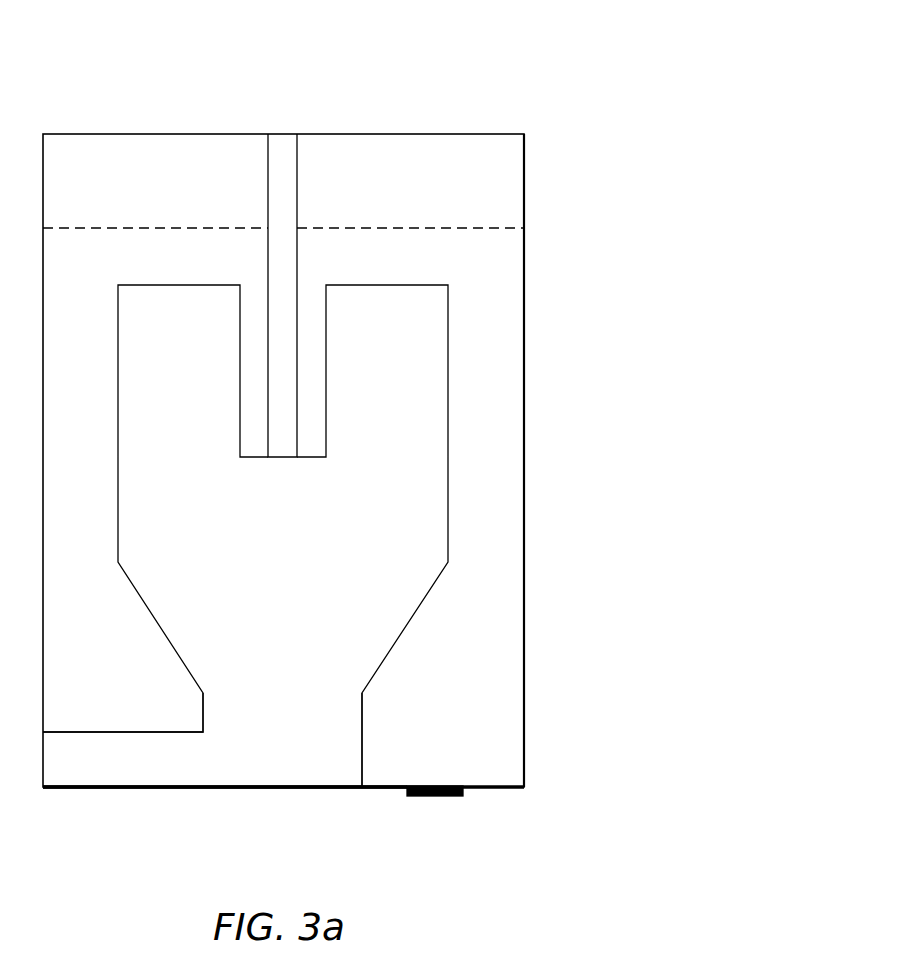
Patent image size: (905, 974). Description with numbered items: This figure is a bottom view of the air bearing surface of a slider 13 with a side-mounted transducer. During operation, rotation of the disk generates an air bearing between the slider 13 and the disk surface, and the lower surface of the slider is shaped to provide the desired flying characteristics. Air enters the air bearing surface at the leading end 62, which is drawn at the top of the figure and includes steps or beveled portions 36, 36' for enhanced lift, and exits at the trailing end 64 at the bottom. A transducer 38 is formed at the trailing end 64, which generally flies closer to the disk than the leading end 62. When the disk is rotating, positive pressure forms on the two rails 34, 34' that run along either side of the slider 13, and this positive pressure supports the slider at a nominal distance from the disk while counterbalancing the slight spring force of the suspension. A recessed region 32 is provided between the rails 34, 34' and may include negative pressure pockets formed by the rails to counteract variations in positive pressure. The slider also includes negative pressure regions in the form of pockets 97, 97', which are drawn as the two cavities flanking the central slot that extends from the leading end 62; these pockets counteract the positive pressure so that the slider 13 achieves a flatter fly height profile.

The slider 13 is at (510, 85).
The recessed region 32 is at (245, 622).
The rail 34 is at (123, 693).
The rail 34' is at (443, 737).
The step or beveled portion 36 is at (155, 198).
The step or beveled portion 36' is at (410, 194).
The transducer 38 is at (455, 797).
The leading end 62 is at (282, 132).
The trailing end 64 is at (250, 789).
The pocket 97 is at (193, 371).
The pocket 97' is at (372, 371).